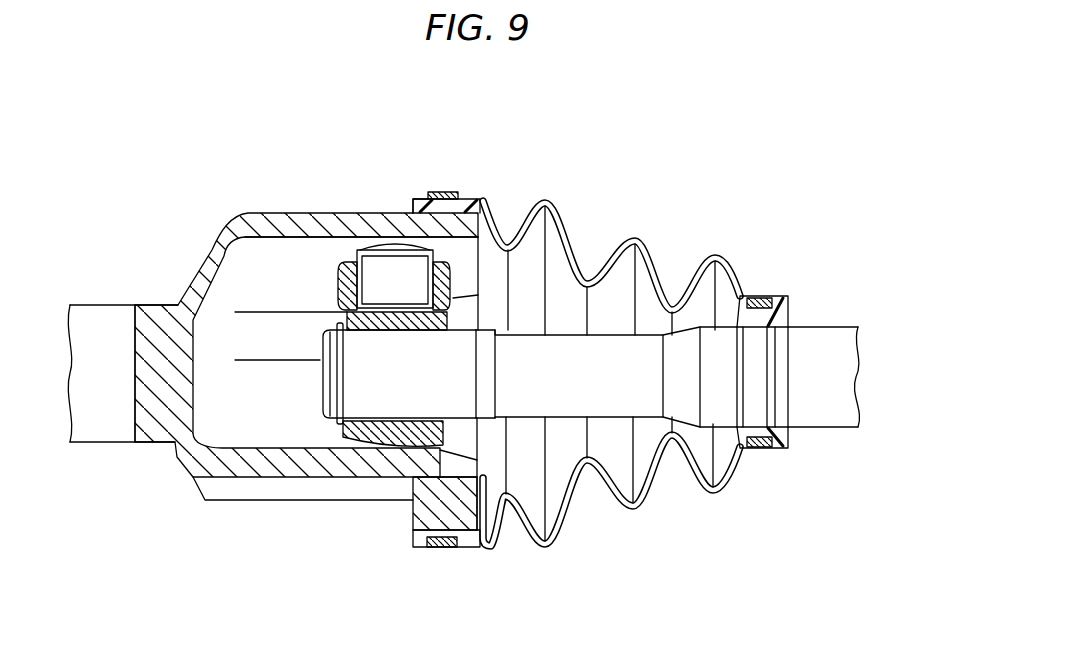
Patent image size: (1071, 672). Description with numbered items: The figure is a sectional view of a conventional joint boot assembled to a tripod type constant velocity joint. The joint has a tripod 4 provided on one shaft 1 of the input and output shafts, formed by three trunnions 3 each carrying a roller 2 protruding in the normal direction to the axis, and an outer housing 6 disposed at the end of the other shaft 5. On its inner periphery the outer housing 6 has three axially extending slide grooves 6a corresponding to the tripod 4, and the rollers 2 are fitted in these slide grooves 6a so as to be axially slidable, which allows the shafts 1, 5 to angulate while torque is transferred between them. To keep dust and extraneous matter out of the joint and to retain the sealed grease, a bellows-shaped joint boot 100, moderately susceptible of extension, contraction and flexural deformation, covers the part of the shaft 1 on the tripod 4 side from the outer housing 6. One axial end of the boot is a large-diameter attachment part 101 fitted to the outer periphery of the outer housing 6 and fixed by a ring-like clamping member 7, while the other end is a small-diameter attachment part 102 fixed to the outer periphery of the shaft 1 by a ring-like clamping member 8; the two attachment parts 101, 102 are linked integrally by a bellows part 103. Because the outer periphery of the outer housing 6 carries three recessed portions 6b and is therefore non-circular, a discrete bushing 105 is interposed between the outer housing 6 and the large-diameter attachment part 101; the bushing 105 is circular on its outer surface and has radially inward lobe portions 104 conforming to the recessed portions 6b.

The shaft 1 is at (822, 415).
The roller 2 is at (338, 268).
The trunnion 3 is at (383, 277).
The tripod 4 is at (327, 427).
The shaft 5 is at (115, 422).
The outer housing 6 is at (306, 361).
The slide groove 6a is at (288, 240).
The recessed portion 6b is at (348, 482).
The clamping member 7 is at (443, 193).
The clamping member 8 is at (760, 298).
The joint boot 100 is at (611, 350).
The large-diameter attachment part 101 is at (477, 154).
The small-diameter attachment part 102 is at (800, 319).
The bellows part 103 is at (623, 500).
The lobe portion 104 is at (414, 508).
The bushing 105 is at (413, 211).